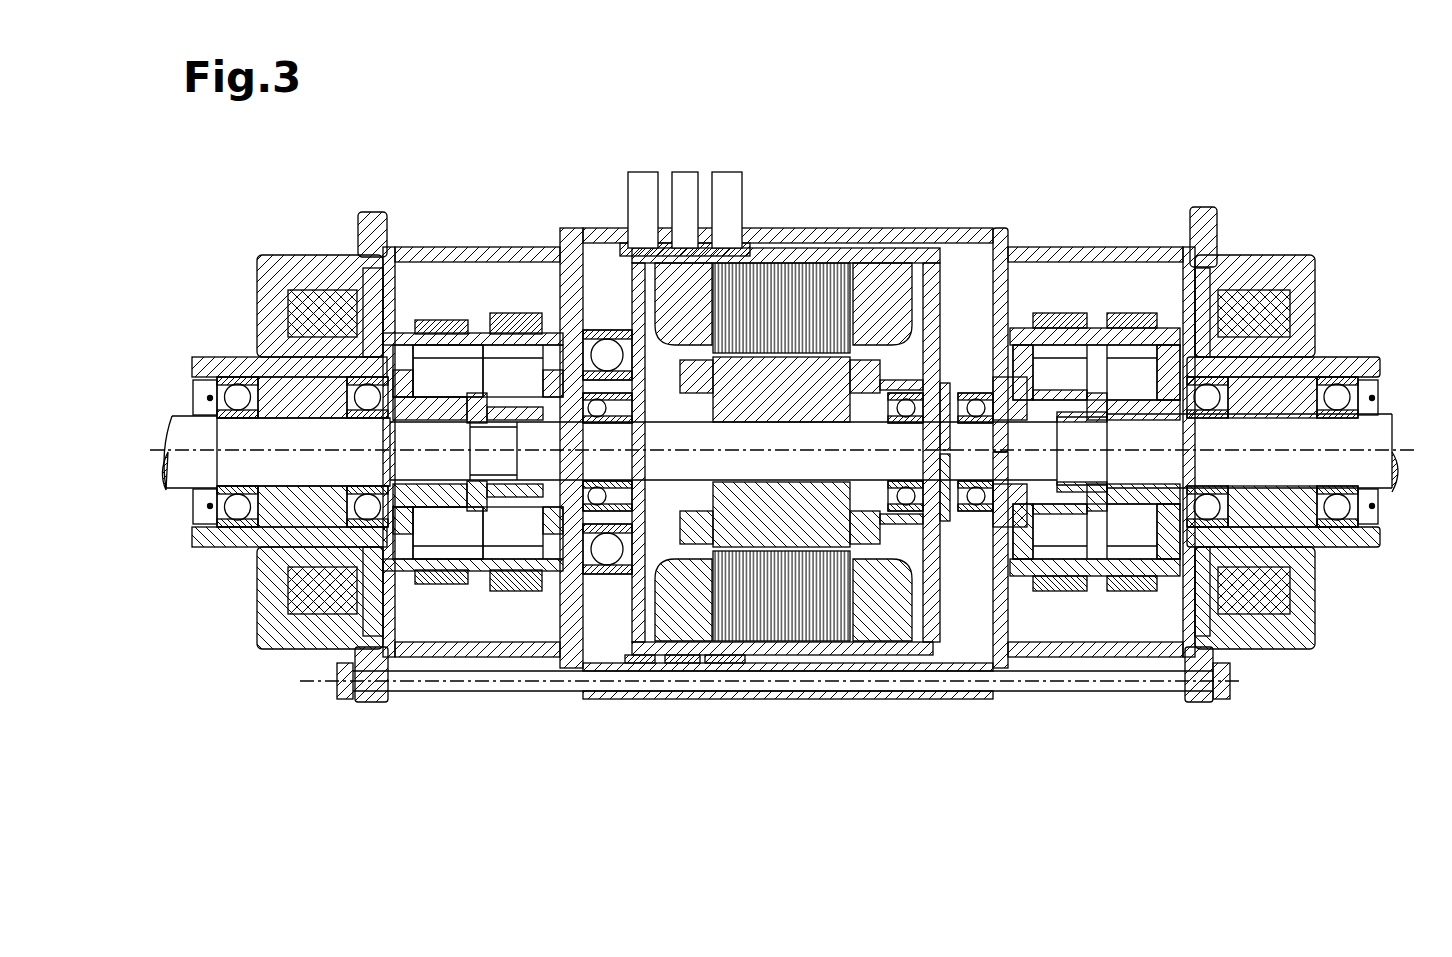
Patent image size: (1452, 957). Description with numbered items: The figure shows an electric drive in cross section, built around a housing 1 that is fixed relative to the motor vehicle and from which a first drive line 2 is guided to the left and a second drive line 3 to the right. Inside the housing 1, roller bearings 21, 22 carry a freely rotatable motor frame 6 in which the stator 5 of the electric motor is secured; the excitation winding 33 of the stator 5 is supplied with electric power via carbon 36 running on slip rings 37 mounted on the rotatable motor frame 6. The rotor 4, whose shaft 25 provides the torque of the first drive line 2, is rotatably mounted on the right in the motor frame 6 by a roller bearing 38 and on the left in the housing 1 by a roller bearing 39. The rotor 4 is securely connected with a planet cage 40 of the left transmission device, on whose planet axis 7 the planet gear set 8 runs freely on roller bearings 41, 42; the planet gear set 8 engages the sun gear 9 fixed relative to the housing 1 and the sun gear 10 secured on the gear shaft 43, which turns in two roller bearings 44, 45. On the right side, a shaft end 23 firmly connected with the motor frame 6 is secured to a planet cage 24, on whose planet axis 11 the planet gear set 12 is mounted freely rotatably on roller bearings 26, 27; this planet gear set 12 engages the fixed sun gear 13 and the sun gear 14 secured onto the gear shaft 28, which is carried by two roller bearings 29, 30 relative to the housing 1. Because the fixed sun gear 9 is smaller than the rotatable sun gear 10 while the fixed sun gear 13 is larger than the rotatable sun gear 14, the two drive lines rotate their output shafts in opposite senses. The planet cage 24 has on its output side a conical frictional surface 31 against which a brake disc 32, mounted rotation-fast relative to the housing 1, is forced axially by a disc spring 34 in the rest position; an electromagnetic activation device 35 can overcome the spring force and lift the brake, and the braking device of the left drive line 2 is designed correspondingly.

The housing 1 is at (800, 245).
The first drive line 2 is at (176, 372).
The second drive line 3 is at (1398, 362).
The rotor 4 is at (818, 300).
The stator 5 is at (770, 307).
The motor frame 6 is at (837, 327).
The planet axis 7 is at (566, 290).
The planet gear set 8 is at (550, 353).
The sun gear 9 is at (532, 519).
The sun gear 10 is at (443, 542).
The planet axis 11 is at (1093, 410).
The planet gear set 12 is at (1047, 330).
The sun gear 13 is at (1047, 504).
The sun gear 14 is at (1132, 494).
The roller bearing 21 is at (607, 355).
The roller bearing 22 is at (905, 300).
The shaft end 23 is at (976, 405).
The planet cage 24 is at (997, 440).
The shaft 25 is at (597, 504).
The roller bearing 26 is at (1133, 327).
The roller bearing 27 is at (1022, 365).
The gear shaft 28 is at (1110, 350).
The roller bearing 29 is at (1197, 210).
The roller bearing 30 is at (1262, 300).
The conical frictional surface 31 is at (1180, 580).
The brake disc 32 is at (1207, 393).
The excitation winding 33 is at (745, 240).
The disc spring 34 is at (1162, 350).
The electromagnetic activation device 35 is at (1263, 590).
The carbon 36 is at (640, 228).
The slip rings 37 is at (640, 664).
The roller bearing 38 is at (994, 524).
The roller bearing 39 is at (604, 568).
The planet cage 40 is at (465, 395).
The roller bearing 41 is at (430, 318).
The roller bearing 42 is at (510, 317).
The gear shaft 43 is at (186, 430).
The roller bearing 44 is at (238, 514).
The roller bearing 45 is at (330, 572).